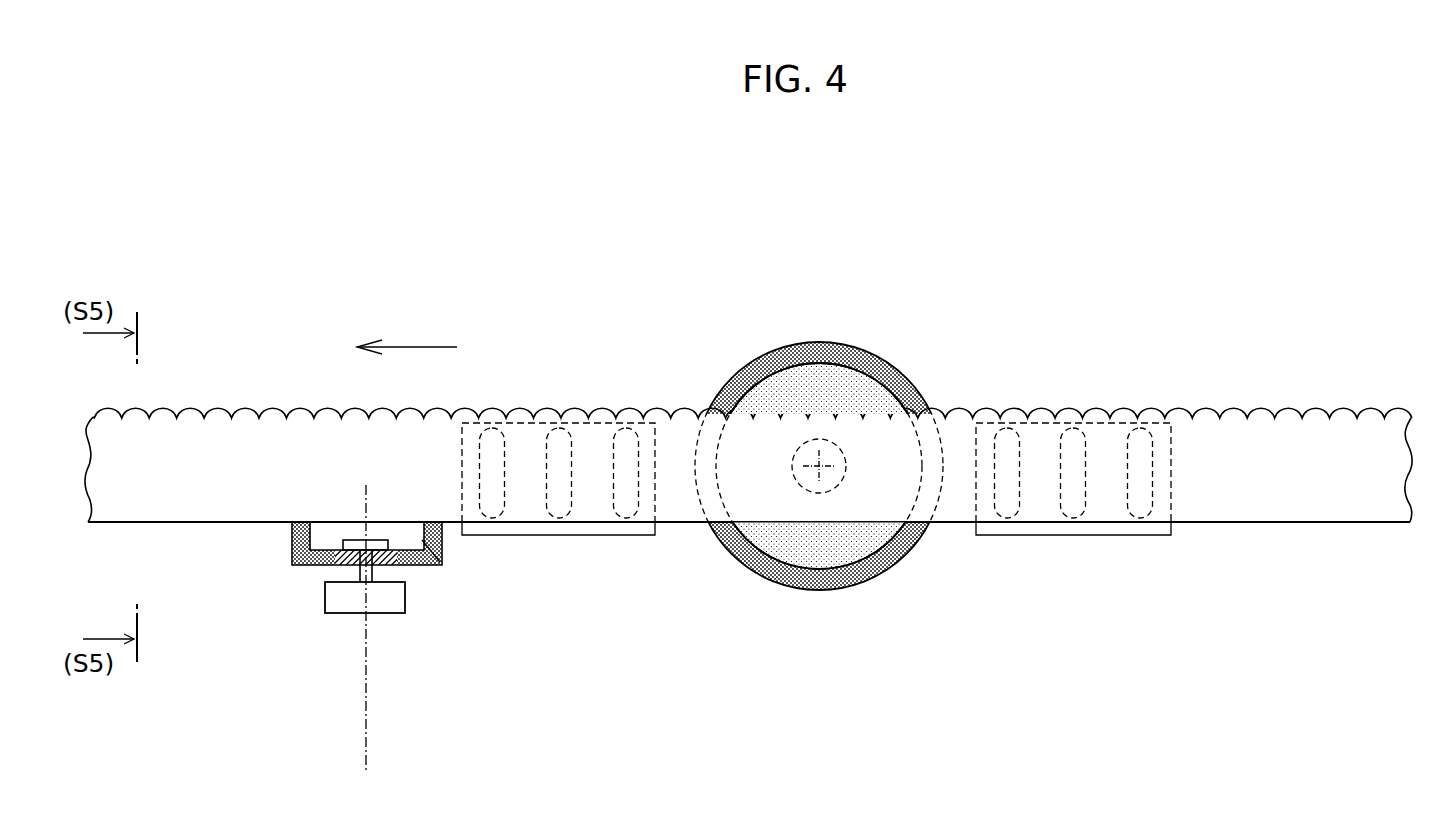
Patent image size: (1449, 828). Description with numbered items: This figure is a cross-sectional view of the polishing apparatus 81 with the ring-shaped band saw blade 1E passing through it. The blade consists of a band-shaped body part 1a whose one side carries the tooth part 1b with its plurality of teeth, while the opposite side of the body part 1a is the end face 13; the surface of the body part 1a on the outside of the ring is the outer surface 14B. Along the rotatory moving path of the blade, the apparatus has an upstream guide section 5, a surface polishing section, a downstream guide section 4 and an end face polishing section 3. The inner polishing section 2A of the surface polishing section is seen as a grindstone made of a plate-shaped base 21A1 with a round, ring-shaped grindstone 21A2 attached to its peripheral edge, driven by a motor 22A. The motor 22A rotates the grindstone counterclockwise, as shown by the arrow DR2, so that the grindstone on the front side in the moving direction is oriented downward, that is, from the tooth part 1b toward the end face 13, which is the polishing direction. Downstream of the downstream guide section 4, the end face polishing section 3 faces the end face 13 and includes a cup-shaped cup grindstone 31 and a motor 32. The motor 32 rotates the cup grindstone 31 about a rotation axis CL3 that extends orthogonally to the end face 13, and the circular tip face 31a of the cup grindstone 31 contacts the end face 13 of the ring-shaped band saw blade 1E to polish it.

The polishing apparatus 81 is at (1108, 217).
The tooth part 1b is at (1333, 393).
The body part 1a is at (1260, 493).
The outer surface 14B is at (1204, 493).
The ring-shaped band saw blade 1E is at (1338, 525).
The end face 13 is at (1378, 525).
The inner polishing section 2A is at (859, 425).
The plate-shaped base 21A1 is at (818, 377).
The round grindstone 21A2 is at (868, 348).
The motor 22A is at (800, 488).
The arrow indicating rotating direction DR2 is at (800, 326).
The downstream guide section 4 is at (615, 535).
The upstream guide section 5 is at (1102, 535).
The end face polishing section 3 is at (326, 640).
The cup grindstone 31 is at (292, 547).
The circular tip face 31a is at (312, 552).
The motor 32 is at (387, 614).
The rotation axis CL3 is at (366, 735).